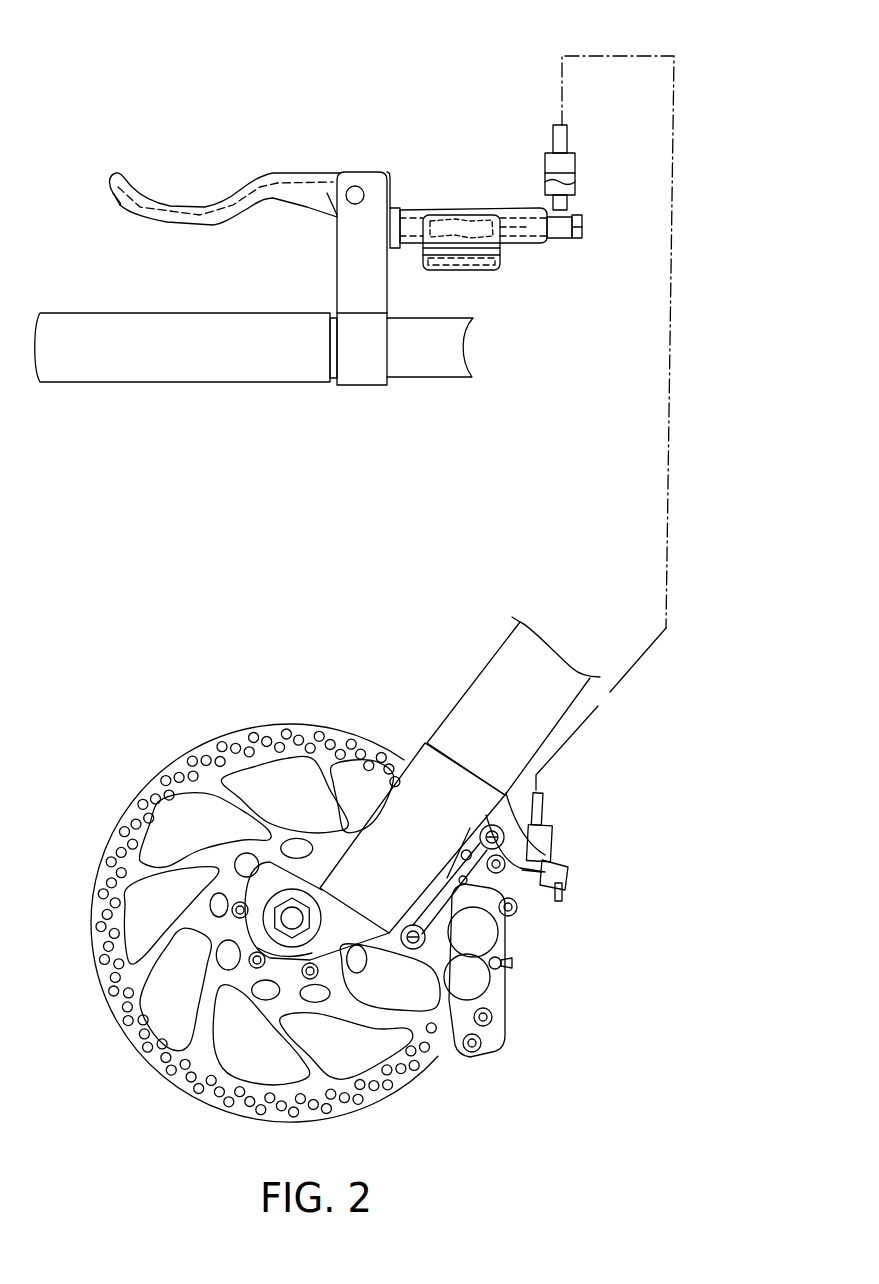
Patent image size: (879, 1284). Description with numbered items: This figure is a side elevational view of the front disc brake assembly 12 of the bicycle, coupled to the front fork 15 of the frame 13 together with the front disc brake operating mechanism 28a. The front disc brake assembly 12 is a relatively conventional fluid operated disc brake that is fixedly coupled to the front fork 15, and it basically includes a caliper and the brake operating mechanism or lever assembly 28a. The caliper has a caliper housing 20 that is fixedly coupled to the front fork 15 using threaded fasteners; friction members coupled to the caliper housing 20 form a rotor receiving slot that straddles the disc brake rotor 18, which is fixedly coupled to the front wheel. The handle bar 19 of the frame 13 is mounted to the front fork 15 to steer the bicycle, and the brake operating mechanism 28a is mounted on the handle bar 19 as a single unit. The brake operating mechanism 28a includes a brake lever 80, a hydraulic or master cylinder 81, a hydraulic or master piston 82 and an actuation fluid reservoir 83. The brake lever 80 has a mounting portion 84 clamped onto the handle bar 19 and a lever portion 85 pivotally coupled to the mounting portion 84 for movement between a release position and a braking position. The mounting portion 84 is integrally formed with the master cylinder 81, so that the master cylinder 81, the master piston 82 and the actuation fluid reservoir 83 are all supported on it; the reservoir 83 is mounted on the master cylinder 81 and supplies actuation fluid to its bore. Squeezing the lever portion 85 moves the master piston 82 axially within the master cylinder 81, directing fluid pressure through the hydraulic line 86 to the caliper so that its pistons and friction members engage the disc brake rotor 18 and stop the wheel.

The front disc brake assembly 12 is at (591, 943).
The frame 13 is at (487, 652).
The front fork 15 is at (467, 690).
The disc brake rotor 18 is at (122, 799).
The handle bar 19 is at (428, 378).
The caliper housing 20 is at (498, 993).
The brake operating mechanism 28a is at (346, 102).
The brake lever 80 is at (243, 176).
The master cylinder 81 is at (455, 212).
The master piston 82 is at (440, 210).
The actuation fluid reservoir 83 is at (500, 264).
The mounting portion 84 is at (337, 277).
The lever portion 85 is at (226, 228).
The hydraulic line 86 is at (567, 131).